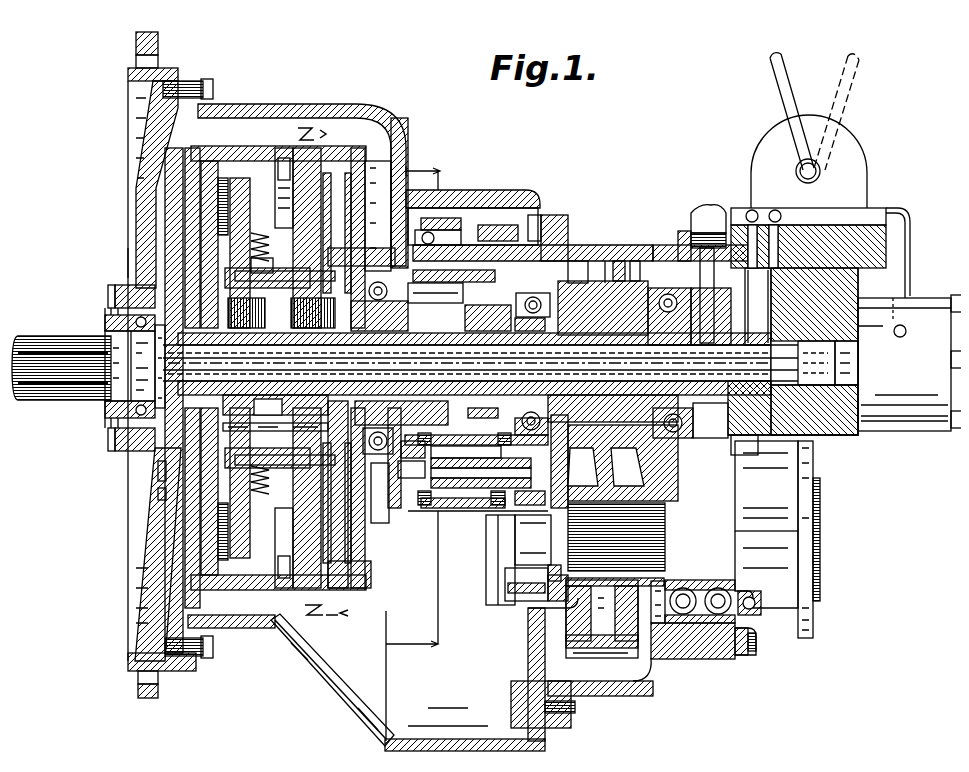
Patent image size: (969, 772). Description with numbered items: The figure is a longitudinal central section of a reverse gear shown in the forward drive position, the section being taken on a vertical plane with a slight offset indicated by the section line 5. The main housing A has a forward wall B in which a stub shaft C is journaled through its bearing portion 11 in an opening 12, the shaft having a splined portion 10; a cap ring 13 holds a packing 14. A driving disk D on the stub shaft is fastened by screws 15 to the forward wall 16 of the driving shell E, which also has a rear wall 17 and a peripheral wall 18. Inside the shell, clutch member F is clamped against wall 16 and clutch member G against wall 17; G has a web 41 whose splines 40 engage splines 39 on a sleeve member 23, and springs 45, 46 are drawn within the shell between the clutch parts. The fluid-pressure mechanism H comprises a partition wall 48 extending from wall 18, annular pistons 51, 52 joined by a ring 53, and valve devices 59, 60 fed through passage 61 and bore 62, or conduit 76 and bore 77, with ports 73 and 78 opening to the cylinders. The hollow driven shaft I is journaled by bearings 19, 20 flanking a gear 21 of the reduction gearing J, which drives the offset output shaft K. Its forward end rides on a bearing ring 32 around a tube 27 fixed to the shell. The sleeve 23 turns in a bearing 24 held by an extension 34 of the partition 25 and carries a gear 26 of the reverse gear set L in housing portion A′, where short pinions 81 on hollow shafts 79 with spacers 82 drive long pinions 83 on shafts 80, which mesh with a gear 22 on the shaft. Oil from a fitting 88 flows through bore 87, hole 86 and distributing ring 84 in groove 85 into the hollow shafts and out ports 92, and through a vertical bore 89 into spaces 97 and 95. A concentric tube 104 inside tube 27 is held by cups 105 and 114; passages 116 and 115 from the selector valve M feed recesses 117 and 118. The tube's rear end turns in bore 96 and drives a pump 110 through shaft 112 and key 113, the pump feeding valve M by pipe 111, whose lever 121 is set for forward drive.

The main housing A is at (353, 97).
The housing portion A′ is at (470, 180).
The forward wall B is at (127, 198).
The stub shaft C is at (26, 340).
The driving disk D is at (120, 258).
The driving shell E is at (228, 152).
The movable friction clutch member F is at (208, 175).
The movable friction clutch member G is at (350, 172).
The fluid-pressure mechanism H is at (342, 222).
The driven shaft I is at (690, 420).
The reduction gearing J is at (610, 255).
The offset output shaft K is at (790, 527).
The reverse gear set L is at (472, 230).
The selector valve M is at (840, 138).
The section line 5 is at (413, 446).
The splined portion 10 is at (37, 344).
The cylindrical bearing portion 11 is at (128, 340).
The opening 12 is at (122, 443).
The metal cap ring 13 is at (104, 430).
The packing 14 is at (97, 406).
The screws 15 is at (150, 467).
The forward wall 16 is at (172, 494).
The rear wall 17 is at (357, 534).
The cylindrical peripheral wall 18 is at (340, 590).
The antifriction bearing 19 is at (700, 246).
The antifriction bearing 20 is at (568, 262).
The gear 21 is at (641, 256).
The gear 22 is at (614, 461).
The sleeve member 23 is at (370, 446).
The antifriction bearing 24 is at (340, 248).
The partition 25 is at (388, 196).
The gear 26 is at (449, 460).
The inner supporting member 27 is at (613, 408).
The bearing ring 32 is at (275, 406).
The ring-like extension 34 is at (381, 493).
The splines 39 is at (275, 415).
The splines 40 is at (265, 448).
The web 41 is at (350, 184).
The spring 45 is at (255, 314).
The spring 46 is at (310, 314).
The partition wall 48 is at (240, 580).
The annular piston 51 is at (325, 165).
The annular piston 52 is at (235, 168).
The connecting member 53 is at (262, 254).
The valve device 59 is at (274, 150).
The valve device 60 is at (274, 580).
The radial passage 61 is at (186, 222).
The axial bore 62 is at (216, 168).
The port 73 is at (261, 230).
The conduit 76 is at (178, 524).
The bore 77 is at (200, 612).
The inlet port 78 is at (326, 602).
The hollow shaft 79 is at (453, 241).
The hollow shaft 80 is at (425, 503).
The short pinion 81 is at (440, 210).
The spacer 82 is at (502, 223).
The long pinion 83 is at (478, 520).
The distributing ring 84 is at (548, 240).
The groove 85 is at (527, 206).
The hole 86 is at (567, 250).
The longitudinal bore 87 is at (600, 252).
The fitting 88 is at (703, 200).
The vertical bore 89 is at (650, 292).
The ports 92 is at (460, 480).
The space 95 is at (527, 318).
The bore 96 is at (745, 428).
The space 97 is at (703, 333).
The concentric tube 104 is at (728, 373).
The cup 105 is at (168, 358).
The rotary pump 110 is at (917, 305).
The pipe 111 is at (895, 260).
The pump shaft 112 is at (835, 346).
The key 113 is at (830, 333).
The plastic cup 114 is at (814, 397).
The passage 115 is at (770, 238).
The passage 116 is at (753, 228).
The annular supply recess 117 is at (814, 416).
The supply recess 118 is at (775, 338).
The lever 121 is at (772, 72).